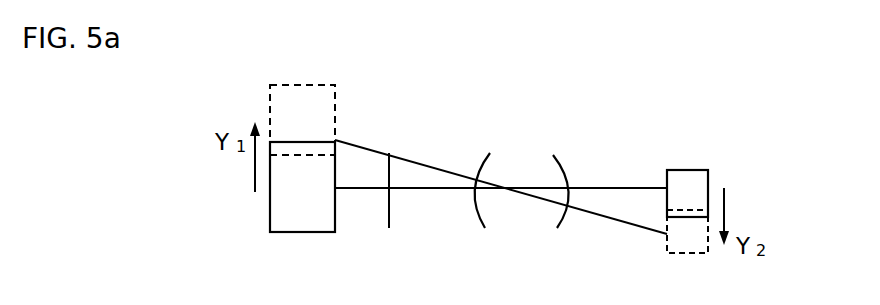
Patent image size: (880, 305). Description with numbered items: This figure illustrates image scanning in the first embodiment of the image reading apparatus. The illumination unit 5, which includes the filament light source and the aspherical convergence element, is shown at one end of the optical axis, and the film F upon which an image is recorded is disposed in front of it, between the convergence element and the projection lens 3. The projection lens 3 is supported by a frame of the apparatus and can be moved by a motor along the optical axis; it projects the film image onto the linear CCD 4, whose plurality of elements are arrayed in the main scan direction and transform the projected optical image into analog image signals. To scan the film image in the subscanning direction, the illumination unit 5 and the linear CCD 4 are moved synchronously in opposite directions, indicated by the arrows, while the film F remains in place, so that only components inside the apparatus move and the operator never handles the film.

The projection lens 3 is at (566, 176).
The linear charge-coupled device 4 is at (683, 170).
The illumination unit 5 is at (270, 208).
The film F is at (385, 204).